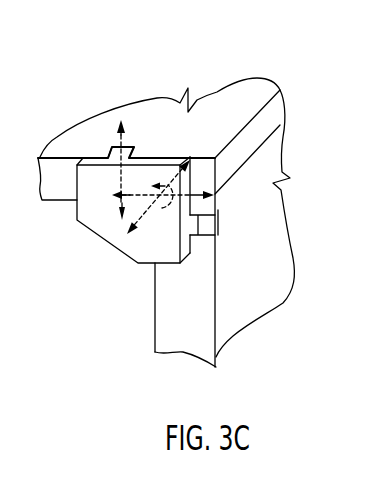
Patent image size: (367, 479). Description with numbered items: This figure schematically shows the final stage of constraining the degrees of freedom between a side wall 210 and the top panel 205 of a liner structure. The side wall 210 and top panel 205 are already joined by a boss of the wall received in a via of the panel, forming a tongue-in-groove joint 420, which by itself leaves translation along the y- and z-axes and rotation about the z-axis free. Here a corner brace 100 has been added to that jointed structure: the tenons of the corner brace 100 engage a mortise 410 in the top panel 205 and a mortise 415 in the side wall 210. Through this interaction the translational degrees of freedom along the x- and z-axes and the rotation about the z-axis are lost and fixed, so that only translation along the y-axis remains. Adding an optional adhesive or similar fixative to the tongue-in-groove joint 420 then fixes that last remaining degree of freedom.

The corner brace 100 is at (88, 210).
The top panel 205 is at (218, 92).
The side wall 210 is at (183, 352).
The mortise 410 is at (115, 149).
The mortise 415 is at (219, 222).
The tongue-in-groove joint 420 is at (249, 154).